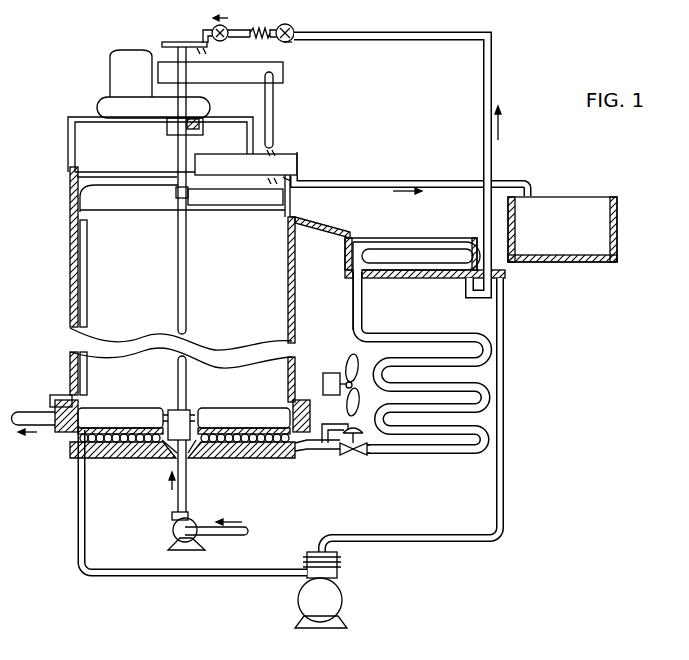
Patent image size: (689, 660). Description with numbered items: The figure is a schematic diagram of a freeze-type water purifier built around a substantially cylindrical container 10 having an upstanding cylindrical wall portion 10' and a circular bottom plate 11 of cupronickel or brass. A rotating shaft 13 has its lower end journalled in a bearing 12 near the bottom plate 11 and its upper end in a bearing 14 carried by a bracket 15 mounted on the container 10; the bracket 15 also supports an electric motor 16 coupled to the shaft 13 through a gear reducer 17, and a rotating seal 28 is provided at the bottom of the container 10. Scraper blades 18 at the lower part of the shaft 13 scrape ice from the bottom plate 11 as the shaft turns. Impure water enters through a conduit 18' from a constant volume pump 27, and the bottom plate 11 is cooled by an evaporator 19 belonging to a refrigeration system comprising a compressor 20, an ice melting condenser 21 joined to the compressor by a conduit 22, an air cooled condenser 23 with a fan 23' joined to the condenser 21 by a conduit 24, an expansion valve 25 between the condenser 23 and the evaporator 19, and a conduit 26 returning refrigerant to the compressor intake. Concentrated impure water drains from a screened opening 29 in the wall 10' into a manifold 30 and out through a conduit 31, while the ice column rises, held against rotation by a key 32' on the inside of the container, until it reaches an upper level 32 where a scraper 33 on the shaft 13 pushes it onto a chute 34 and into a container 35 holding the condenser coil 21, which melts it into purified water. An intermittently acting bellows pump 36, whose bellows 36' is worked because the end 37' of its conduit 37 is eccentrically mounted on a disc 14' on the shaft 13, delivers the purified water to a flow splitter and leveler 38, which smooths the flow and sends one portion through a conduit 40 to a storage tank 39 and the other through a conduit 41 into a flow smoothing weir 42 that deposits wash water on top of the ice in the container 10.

The cylindrical container 10 is at (164, 281).
The upstanding cylindrical wall portion 10' is at (304, 309).
The bottom plate 11 is at (212, 424).
The bearing 12 is at (171, 453).
The rotating shaft 13 is at (193, 228).
The bearing 14 is at (220, 109).
The disc 14' is at (183, 30).
The bracket 15 is at (160, 144).
The electric motor 16 is at (117, 83).
The gear reducer 17 is at (153, 106).
The scraper blades 18 is at (184, 412).
The conduit 18' is at (191, 476).
The evaporator 19 is at (121, 455).
The compressor 20 is at (310, 607).
The ice melting condenser 21 is at (432, 242).
The conduit 22 is at (504, 340).
The air cooled condenser 23 is at (423, 360).
The fan 23' is at (335, 382).
The conduit 24 is at (357, 317).
The expansion valve 25 is at (332, 451).
The conduit 26 is at (247, 569).
The pump 27 is at (175, 534).
The rotating seal 28 is at (193, 455).
The opening 29 is at (85, 408).
The manifold 30 is at (56, 396).
The conduit 31 is at (44, 414).
The upper level 32 is at (235, 222).
The key 32' is at (99, 307).
The scraper 33 is at (120, 206).
The chute 34 is at (345, 226).
The container 35 is at (345, 265).
The pump 36 is at (281, 24).
The bellows 36' is at (296, 51).
The conduit 37 is at (218, 27).
The end of conduit 37' is at (226, 52).
The flow splitter and leveler 38 is at (290, 163).
The storage tank 39 is at (550, 241).
The conduit 40 is at (373, 180).
The conduit 41 is at (299, 172).
The flow smoothing weir 42 is at (290, 201).